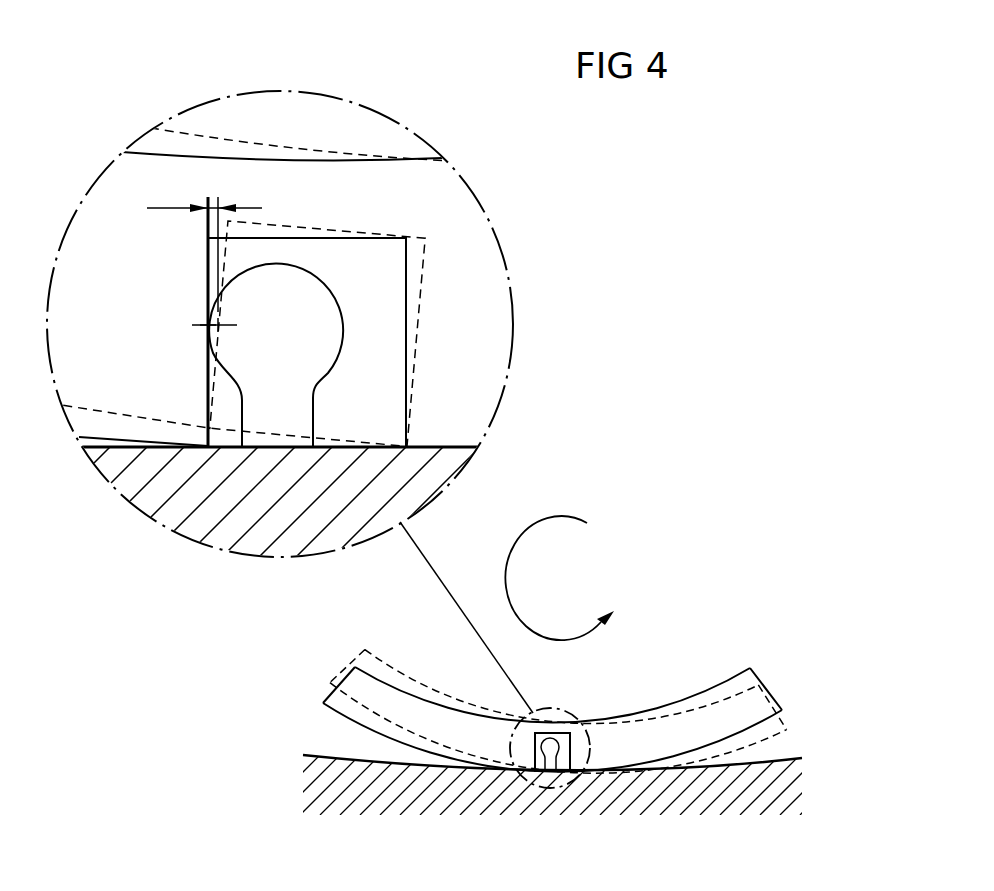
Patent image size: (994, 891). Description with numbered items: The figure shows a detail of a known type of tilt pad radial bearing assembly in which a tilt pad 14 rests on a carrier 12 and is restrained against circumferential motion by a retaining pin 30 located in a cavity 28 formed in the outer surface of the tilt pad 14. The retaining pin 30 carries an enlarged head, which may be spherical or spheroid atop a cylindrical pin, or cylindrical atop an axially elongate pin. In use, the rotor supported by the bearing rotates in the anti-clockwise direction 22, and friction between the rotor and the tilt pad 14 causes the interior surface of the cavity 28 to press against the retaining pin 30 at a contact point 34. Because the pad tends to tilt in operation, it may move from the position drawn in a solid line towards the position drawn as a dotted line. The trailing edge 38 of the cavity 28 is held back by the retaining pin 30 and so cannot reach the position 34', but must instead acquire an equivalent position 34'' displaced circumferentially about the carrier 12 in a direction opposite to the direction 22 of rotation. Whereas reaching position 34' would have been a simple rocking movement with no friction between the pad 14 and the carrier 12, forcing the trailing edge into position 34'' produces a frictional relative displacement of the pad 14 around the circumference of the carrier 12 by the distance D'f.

The carrier 12 is at (287, 540).
The tilt pad 14 is at (473, 311).
The anti-clockwise direction 22 is at (548, 522).
The cavity 28 is at (563, 733).
The retaining pin 30 is at (303, 397).
The contact point 34 is at (198, 261).
The position 34' is at (247, 303).
The equivalent position 34'' is at (187, 355).
The trailing edge 38 is at (208, 252).
The distance D'f is at (204, 192).